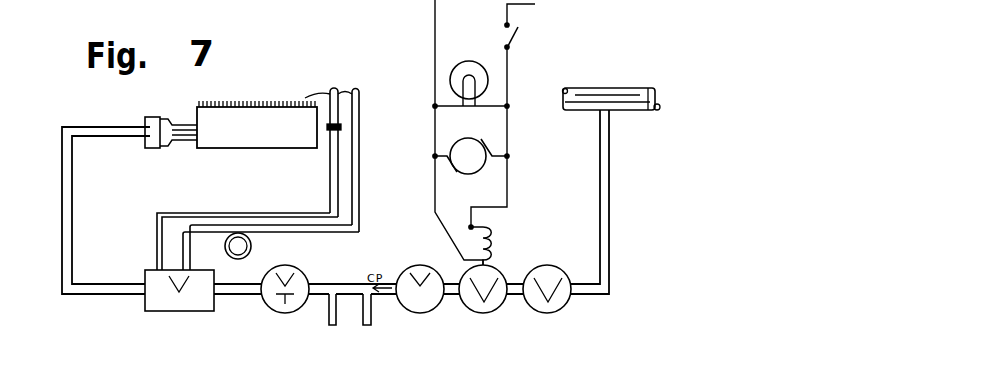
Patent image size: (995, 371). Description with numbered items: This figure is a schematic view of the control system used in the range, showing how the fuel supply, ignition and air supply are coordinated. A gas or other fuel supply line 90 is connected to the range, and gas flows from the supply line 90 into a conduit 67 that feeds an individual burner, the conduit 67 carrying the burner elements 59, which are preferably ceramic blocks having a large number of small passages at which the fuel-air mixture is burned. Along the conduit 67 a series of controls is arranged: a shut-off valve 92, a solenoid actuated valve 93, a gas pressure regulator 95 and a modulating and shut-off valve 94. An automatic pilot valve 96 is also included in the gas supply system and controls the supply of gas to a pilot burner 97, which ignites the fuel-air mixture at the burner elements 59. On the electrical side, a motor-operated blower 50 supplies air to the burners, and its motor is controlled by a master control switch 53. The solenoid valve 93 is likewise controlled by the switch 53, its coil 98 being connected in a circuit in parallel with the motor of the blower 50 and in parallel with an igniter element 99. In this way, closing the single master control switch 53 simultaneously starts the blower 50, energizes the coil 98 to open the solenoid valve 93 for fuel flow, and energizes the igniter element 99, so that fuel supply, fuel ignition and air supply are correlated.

The motor-operated blower 50 is at (472, 166).
The control switch 53 is at (519, 38).
The burner elements 59 is at (258, 112).
The gas supply conduit 67 is at (62, 188).
The gas supply line 90 is at (607, 143).
The shut-off valve 92 is at (565, 303).
The solenoid actuated valve 93 is at (490, 308).
The modulating and shut-off valve 94 is at (290, 308).
The gas pressure regulator 95 is at (418, 308).
The automatic pilot valve 96 is at (203, 306).
The pilot burner 97 is at (360, 103).
The solenoid coil 98 is at (491, 250).
The igniter element 99 is at (469, 64).